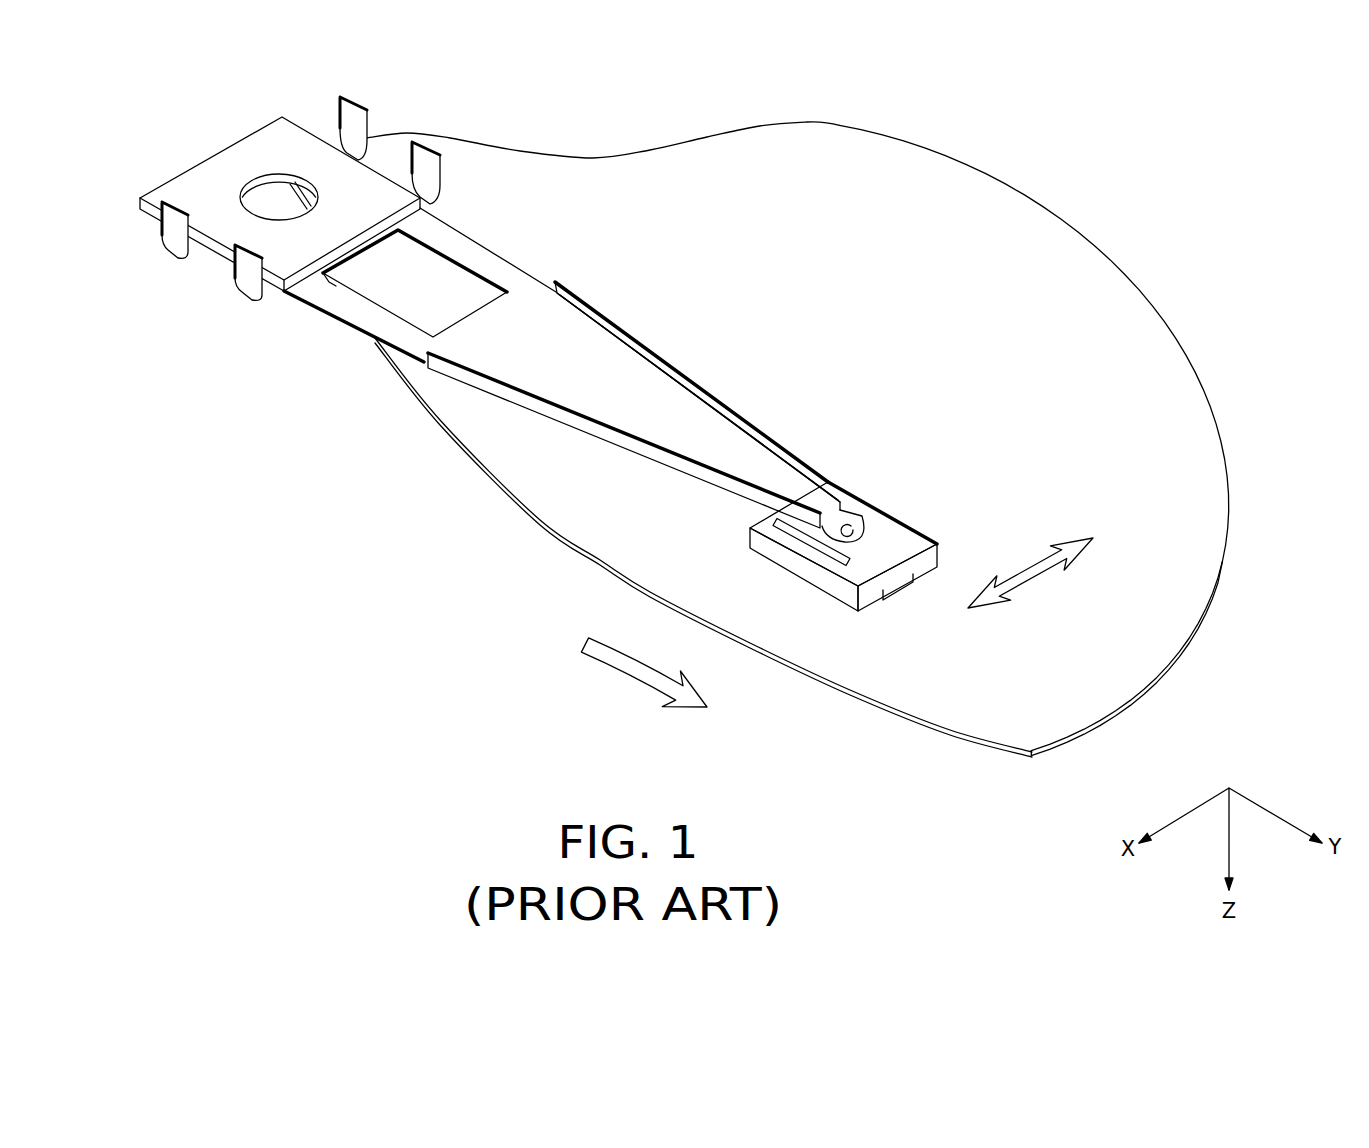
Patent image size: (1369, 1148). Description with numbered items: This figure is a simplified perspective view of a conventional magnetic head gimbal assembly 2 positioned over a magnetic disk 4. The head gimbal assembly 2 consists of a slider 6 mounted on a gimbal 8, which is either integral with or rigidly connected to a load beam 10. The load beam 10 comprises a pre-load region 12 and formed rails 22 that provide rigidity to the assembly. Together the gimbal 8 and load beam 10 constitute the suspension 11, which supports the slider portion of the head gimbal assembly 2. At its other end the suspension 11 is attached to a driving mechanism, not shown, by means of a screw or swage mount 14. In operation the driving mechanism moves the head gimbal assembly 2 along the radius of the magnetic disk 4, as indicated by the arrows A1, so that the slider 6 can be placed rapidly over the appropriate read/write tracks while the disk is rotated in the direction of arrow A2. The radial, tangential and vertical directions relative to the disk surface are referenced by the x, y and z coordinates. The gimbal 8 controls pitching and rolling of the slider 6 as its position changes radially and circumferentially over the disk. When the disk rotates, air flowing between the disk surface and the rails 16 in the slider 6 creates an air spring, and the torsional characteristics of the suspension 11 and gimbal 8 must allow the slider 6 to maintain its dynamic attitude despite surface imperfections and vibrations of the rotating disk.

The magnetic head gimbal assembly 2 is at (716, 252).
The magnetic disk 4 is at (1083, 270).
The slider 6 is at (800, 568).
The gimbal 8 is at (878, 540).
The load beam 10 is at (562, 323).
The suspension 11 is at (697, 388).
The pre-load region 12 is at (495, 272).
The swage mount 14 is at (207, 180).
The rails 16 is at (938, 612).
The formed rails 22 is at (730, 420).
The arrows A1 is at (1038, 570).
The arrow A2 is at (613, 662).